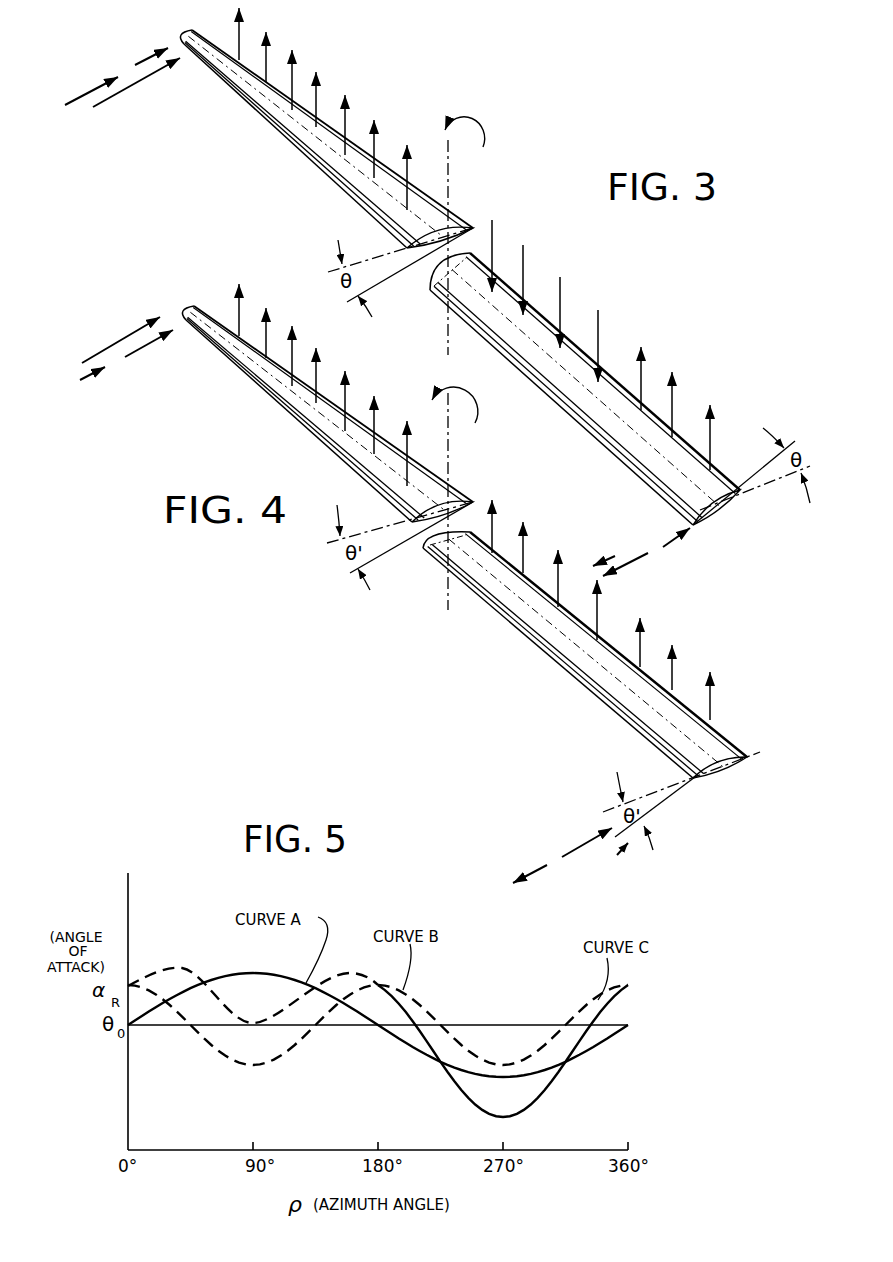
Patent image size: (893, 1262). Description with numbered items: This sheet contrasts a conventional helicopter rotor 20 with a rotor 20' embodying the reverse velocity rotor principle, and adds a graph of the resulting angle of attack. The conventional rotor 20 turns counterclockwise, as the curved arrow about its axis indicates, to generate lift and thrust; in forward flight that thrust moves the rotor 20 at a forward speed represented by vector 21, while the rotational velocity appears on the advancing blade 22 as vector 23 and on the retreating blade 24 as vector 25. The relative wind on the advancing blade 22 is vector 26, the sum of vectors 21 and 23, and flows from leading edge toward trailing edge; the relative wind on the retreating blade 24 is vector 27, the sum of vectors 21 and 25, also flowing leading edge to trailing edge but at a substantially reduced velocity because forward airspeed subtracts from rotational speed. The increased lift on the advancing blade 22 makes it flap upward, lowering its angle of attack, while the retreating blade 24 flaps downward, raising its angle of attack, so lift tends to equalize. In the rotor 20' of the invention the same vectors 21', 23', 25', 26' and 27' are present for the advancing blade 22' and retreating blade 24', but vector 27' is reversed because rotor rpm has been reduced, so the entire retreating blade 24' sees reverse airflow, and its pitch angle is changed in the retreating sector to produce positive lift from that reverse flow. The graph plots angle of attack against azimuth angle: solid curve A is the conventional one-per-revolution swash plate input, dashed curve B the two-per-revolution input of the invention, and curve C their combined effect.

In FIG. 3, the conventional helicopter rotor 20 is at (533, 236).
In FIG. 4, the rotor embodying the invention 20' is at (430, 525).
In FIG. 3, the forward speed vector 21 is at (431, 279).
In FIG. 4, the forward speed vector 21' is at (368, 593).
In FIG. 3, the advancing blade 22 is at (326, 139).
In FIG. 4, the advancing blade 22' is at (327, 414).
In FIG. 3, the rotational velocity vector on advancing blade 23 is at (90, 72).
In FIG. 4, the rotational velocity vector on advancing blade 23' is at (102, 394).
In FIG. 3, the retreating blade 24 is at (585, 389).
In FIG. 4, the retreating blade 24' is at (585, 655).
In FIG. 3, the rotational velocity vector on retreating blade 25 is at (661, 575).
In FIG. 4, the rotational velocity vector on retreating blade 25' is at (513, 856).
In FIG. 3, the resultant relative wind vector on advancing blade 26 is at (138, 90).
In FIG. 4, the resultant relative wind vector on advancing blade 26' is at (121, 316).
In FIG. 3, the resultant relative wind vector on retreating blade 27 is at (615, 533).
In FIG. 4, the resultant relative wind vector on retreating blade 27' is at (650, 861).